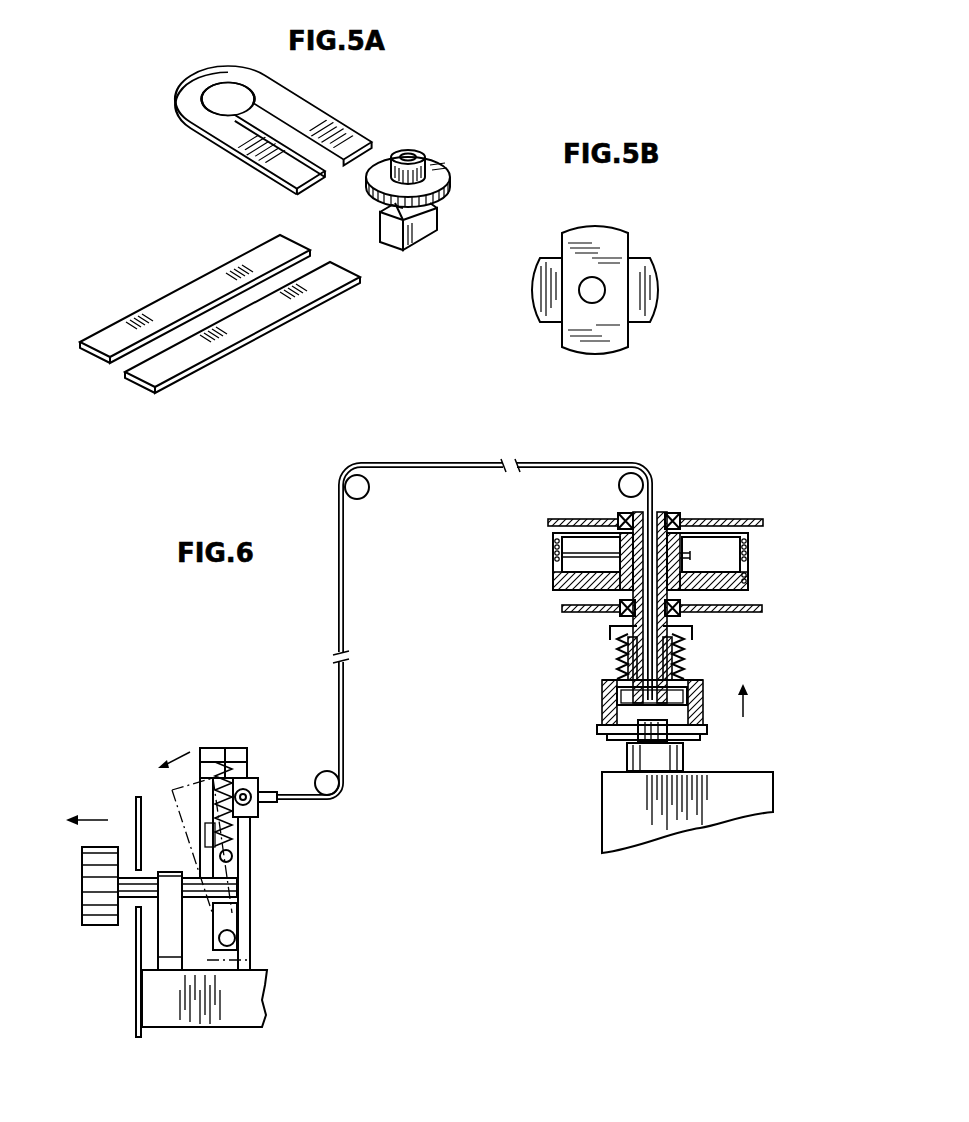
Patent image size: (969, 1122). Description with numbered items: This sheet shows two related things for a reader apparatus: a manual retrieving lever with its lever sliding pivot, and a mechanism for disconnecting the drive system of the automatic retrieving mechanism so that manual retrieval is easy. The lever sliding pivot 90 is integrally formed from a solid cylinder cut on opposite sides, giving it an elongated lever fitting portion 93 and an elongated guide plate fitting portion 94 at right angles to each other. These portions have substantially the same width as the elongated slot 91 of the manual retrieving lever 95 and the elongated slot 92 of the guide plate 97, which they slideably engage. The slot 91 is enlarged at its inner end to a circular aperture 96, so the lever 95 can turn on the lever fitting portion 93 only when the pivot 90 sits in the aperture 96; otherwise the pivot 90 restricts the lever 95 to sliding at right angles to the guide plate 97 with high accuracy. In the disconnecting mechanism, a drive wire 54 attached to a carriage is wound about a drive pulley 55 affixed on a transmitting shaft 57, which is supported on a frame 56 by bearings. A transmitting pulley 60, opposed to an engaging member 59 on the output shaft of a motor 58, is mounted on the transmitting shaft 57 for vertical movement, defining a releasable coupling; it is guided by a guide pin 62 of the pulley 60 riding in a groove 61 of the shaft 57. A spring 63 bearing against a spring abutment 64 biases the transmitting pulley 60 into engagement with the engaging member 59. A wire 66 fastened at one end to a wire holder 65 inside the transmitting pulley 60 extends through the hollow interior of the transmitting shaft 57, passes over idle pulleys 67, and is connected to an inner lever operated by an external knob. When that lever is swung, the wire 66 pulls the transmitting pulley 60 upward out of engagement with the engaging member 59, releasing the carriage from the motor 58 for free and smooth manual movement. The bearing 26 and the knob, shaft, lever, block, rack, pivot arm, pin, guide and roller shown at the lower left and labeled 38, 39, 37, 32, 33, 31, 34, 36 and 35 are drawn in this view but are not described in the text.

In FIG. 5A, the elongated slot 91 is at (305, 145).
In FIG. 5A, the manual retrieving lever 95 is at (263, 155).
In FIG. 5A, the circular aperture 96 is at (228, 99).
In FIG. 5A, the lever sliding pivot 90 is at (443, 163).
In FIG. 5B, the lever sliding pivot 90 is at (620, 290).
In FIG. 5A, the lever fitting portion 93 is at (435, 222).
In FIG. 5B, the lever fitting portion 93 is at (605, 353).
In FIG. 5A, the guide plate fitting portion 94 is at (392, 243).
In FIG. 5B, the guide plate fitting portion 94 is at (655, 290).
In FIG. 5A, the elongated slot 92 is at (253, 292).
In FIG. 5A, the guide plate 97 is at (193, 353).
In FIG. 6, the wire 66 is at (345, 690).
In FIG. 6, the idle pulleys 67 is at (368, 492).
In FIG. 6, the transmitting shaft 57 is at (657, 513).
In FIG. 6, the frame 56 is at (722, 519).
In FIG. 6, the bearing 26 is at (620, 612).
In FIG. 6, the drive wire 54 is at (553, 562).
In FIG. 6, the drive pulley 55 is at (748, 581).
In FIG. 6, the spring abutment 64 is at (692, 628).
In FIG. 6, the spring 63 is at (617, 652).
In FIG. 6, the groove 61 is at (684, 660).
In FIG. 6, the guide pin 62 is at (623, 670).
In FIG. 6, the transmitting pulley 60 is at (703, 681).
In FIG. 6, the wire holder 65 is at (618, 703).
In FIG. 6, the engaging member 59 is at (707, 732).
In FIG. 6, the motor 58 is at (617, 827).
In FIG. 6, the shaft 38 is at (132, 895).
In FIG. 6, the knob 39 is at (92, 888).
In FIG. 6, the lever 37 is at (172, 870).
In FIG. 6, the block 32 is at (247, 748).
In FIG. 6, the rack 33 is at (208, 748).
In FIG. 6, the pivot arm 31 is at (272, 803).
In FIG. 6, the pin 34 is at (232, 856).
In FIG. 6, the guide 36 is at (250, 905).
In FIG. 6, the roller 35 is at (235, 938).